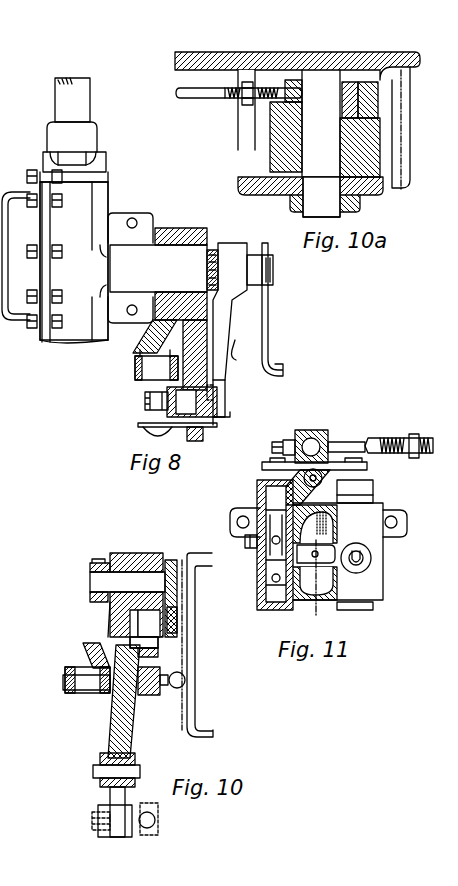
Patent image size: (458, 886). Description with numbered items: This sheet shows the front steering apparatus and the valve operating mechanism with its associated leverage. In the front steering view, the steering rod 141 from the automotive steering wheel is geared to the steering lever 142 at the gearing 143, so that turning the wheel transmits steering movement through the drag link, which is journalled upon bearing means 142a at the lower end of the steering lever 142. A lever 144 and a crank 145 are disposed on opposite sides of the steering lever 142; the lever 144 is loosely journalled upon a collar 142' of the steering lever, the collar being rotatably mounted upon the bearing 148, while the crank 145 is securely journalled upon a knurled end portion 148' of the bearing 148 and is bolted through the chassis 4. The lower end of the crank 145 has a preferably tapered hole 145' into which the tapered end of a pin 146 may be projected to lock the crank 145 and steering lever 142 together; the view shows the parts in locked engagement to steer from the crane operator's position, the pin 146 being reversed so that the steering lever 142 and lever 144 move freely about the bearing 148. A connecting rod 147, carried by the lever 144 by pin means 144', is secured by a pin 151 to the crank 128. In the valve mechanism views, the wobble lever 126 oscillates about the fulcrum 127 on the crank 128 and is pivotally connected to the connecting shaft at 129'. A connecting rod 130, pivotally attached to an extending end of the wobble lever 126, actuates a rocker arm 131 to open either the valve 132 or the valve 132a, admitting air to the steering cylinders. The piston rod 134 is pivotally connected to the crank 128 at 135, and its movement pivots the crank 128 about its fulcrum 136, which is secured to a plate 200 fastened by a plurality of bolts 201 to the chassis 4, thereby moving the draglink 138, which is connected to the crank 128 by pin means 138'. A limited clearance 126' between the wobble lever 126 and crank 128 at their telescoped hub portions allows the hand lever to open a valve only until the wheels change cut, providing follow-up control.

In FIG. 8, the steering rod 141 is at (62, 98).
In FIG. 8, the gearing 143 is at (73, 334).
In FIG. 8, the collar 142' is at (130, 268).
In FIG. 8, the bearing 148 is at (132, 274).
In FIG. 8, the knurled end portion 148' is at (188, 270).
In FIG. 8, the steering lever 142 is at (243, 349).
In FIG. 8, the crank 145 is at (249, 361).
In FIG. 8, the tapered hole 145' is at (238, 398).
In FIG. 8, the pin 146 is at (217, 420).
In FIG. 8, the chassis 4 is at (274, 350).
In FIG. 10, the chassis 4 is at (196, 712).
In FIG. 8, the lever 144 is at (136, 352).
In FIG. 8, the pin means 144' is at (131, 369).
In FIG. 8, the connecting rod 147 is at (145, 397).
In FIG. 10, the connecting rod 147 is at (75, 697).
In FIG. 8, the bearing means 142a is at (147, 430).
In FIG. 10A, the connecting rod 130 is at (183, 97).
In FIG. 11, the connecting rod 130 is at (382, 442).
In FIG. 10A, the crank 128 is at (270, 138).
In FIG. 10, the crank 128 is at (111, 701).
In FIG. 10A, the clearance 126' is at (337, 96).
In FIG. 10, the clearance 126' is at (144, 539).
In FIG. 10A, the wobble lever 126 is at (341, 123).
In FIG. 10, the wobble lever 126 is at (187, 672).
In FIG. 10A, the plate 200 is at (238, 182).
In FIG. 10, the plate 200 is at (175, 557).
In FIG. 10A, the fulcrum 136 is at (350, 202).
In FIG. 10, the fulcrum 136 is at (98, 562).
In FIG. 11, the rocker arm 131 is at (328, 430).
In FIG. 11, the valve 132 is at (372, 485).
In FIG. 11, the valve 132a is at (258, 482).
In FIG. 10, the bolts 201 is at (178, 622).
In FIG. 10, the fulcrum 127 is at (172, 639).
In FIG. 10, the pivotal connection 129' is at (202, 681).
In FIG. 10, the pin 151 is at (67, 667).
In FIG. 10, the piston rod 134 is at (100, 757).
In FIG. 10, the pivotal connection 135 is at (93, 773).
In FIG. 10, the draglink 138 is at (162, 790).
In FIG. 10, the pin means 138' is at (172, 821).